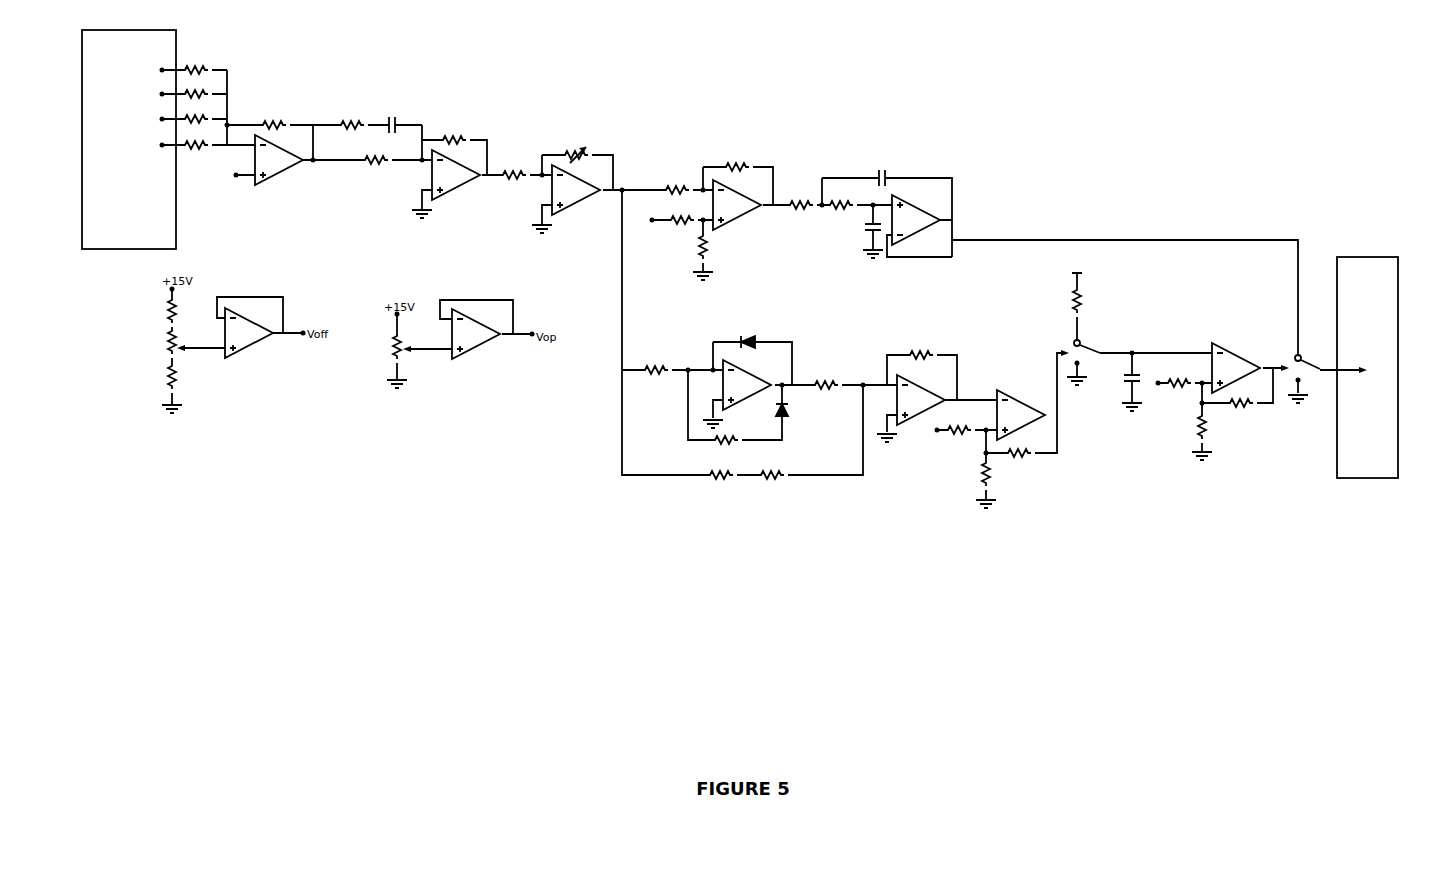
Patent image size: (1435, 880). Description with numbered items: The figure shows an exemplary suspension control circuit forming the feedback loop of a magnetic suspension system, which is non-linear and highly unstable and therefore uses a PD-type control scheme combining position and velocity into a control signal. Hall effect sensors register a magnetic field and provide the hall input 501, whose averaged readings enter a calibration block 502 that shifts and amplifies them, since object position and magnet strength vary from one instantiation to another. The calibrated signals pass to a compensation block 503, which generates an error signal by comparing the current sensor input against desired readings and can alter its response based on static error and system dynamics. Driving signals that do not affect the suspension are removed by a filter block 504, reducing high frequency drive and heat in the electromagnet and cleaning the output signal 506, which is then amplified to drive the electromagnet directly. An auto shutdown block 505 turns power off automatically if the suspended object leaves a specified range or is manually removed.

The hall input 501 is at (129, 139).
The calibration block 502 is at (356, 139).
The compensation block 503 is at (549, 196).
The filter block 504 is at (959, 233).
The auto shutdown block 505 is at (994, 381).
The output signal 506 is at (1367, 367).